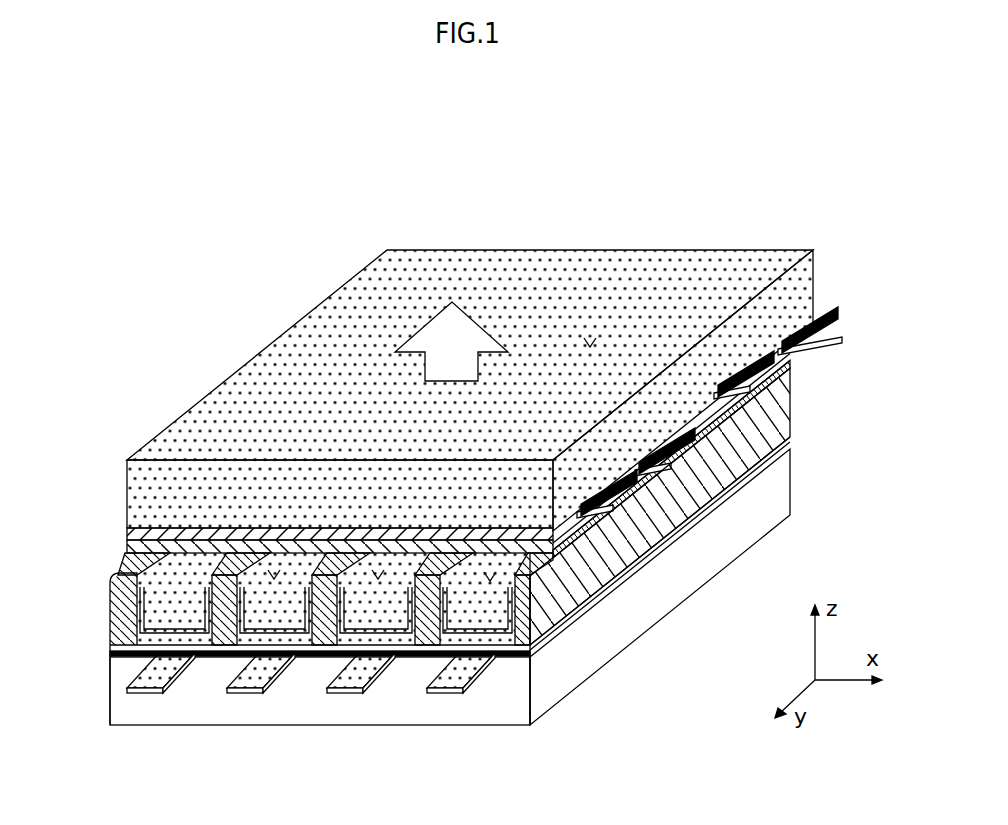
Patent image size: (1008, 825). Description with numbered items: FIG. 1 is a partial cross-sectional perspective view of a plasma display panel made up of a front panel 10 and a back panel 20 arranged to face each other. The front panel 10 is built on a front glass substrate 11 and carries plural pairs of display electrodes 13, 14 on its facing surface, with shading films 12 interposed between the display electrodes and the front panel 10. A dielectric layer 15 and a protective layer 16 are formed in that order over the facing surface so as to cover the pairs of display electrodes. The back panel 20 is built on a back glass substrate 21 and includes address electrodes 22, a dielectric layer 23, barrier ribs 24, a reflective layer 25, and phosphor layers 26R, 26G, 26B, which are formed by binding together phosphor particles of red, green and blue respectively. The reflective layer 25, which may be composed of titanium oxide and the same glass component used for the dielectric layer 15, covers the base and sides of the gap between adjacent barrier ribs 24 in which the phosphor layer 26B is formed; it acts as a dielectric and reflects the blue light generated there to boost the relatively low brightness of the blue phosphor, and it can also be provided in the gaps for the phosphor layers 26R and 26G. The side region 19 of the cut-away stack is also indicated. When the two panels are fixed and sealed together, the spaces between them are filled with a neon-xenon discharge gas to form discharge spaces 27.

The front panel 10 is at (480, 439).
The front glass substrate 11 is at (143, 497).
The shading films 12 is at (770, 397).
The display electrode 13 is at (593, 345).
The display electrode 14 is at (818, 330).
The dielectric layer 15 is at (127, 537).
The protective layer 16 is at (127, 548).
The side wall region 19 is at (667, 508).
The back panel 20 is at (464, 575).
The back glass substrate 21 is at (400, 725).
The address electrodes 22 is at (180, 683).
The dielectric layer 23 is at (128, 652).
The barrier ribs 24 is at (340, 612).
The reflective layer 25 is at (268, 630).
The phosphor layer 26R is at (162, 633).
The phosphor layer 26G is at (247, 615).
The phosphor layer 26B is at (330, 618).
The discharge spaces 27 is at (490, 575).